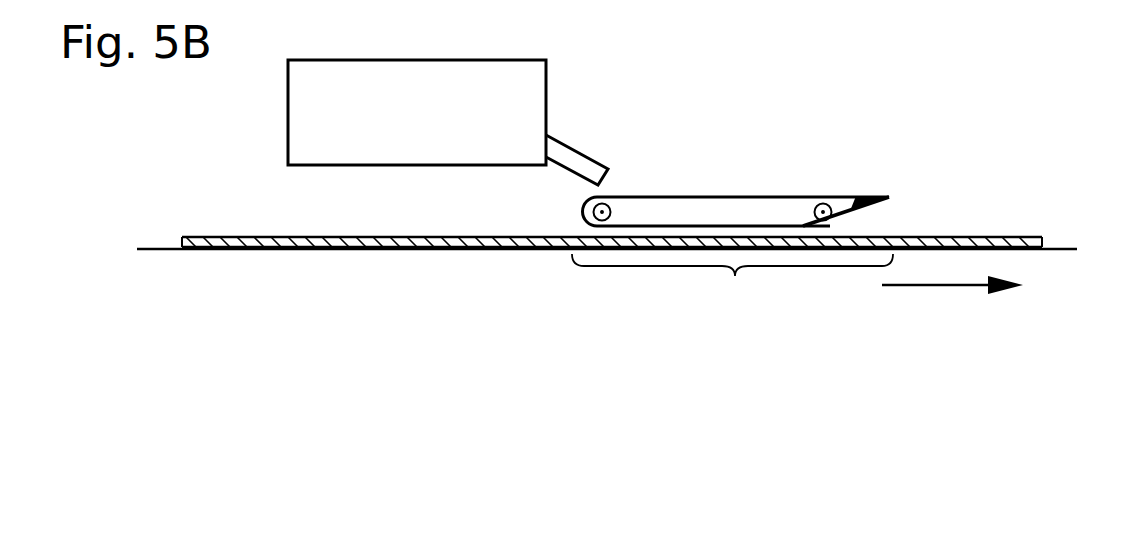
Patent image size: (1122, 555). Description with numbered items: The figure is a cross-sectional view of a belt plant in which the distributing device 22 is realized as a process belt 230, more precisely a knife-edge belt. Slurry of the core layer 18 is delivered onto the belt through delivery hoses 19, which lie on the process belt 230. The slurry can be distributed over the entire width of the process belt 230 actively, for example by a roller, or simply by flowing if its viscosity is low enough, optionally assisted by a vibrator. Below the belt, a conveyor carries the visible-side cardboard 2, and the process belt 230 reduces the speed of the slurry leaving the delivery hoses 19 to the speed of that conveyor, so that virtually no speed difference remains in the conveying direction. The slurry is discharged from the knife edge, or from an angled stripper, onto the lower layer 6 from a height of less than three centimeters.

The visible-side cardboard 2 is at (165, 250).
The lower layer 6 is at (336, 238).
The core layer 18 is at (531, 68).
The delivery hoses 19 is at (571, 161).
The distributing device 22 is at (732, 162).
The process belt 230 is at (672, 197).